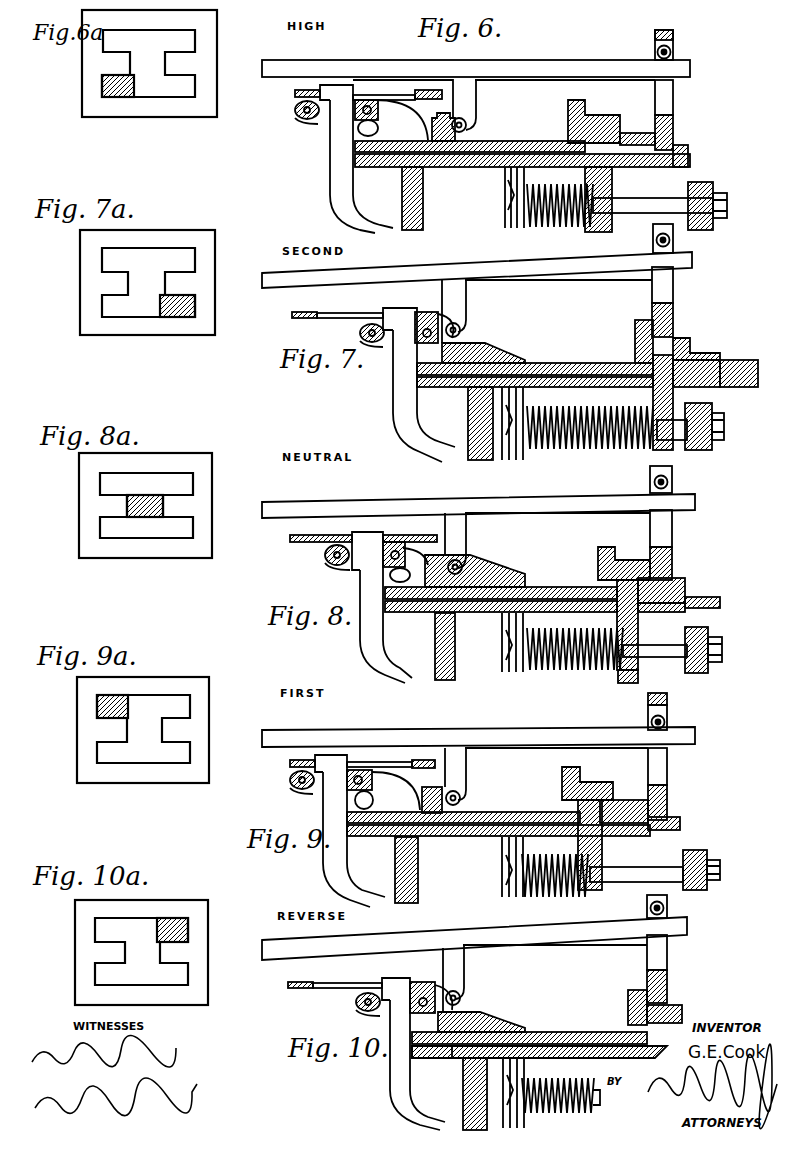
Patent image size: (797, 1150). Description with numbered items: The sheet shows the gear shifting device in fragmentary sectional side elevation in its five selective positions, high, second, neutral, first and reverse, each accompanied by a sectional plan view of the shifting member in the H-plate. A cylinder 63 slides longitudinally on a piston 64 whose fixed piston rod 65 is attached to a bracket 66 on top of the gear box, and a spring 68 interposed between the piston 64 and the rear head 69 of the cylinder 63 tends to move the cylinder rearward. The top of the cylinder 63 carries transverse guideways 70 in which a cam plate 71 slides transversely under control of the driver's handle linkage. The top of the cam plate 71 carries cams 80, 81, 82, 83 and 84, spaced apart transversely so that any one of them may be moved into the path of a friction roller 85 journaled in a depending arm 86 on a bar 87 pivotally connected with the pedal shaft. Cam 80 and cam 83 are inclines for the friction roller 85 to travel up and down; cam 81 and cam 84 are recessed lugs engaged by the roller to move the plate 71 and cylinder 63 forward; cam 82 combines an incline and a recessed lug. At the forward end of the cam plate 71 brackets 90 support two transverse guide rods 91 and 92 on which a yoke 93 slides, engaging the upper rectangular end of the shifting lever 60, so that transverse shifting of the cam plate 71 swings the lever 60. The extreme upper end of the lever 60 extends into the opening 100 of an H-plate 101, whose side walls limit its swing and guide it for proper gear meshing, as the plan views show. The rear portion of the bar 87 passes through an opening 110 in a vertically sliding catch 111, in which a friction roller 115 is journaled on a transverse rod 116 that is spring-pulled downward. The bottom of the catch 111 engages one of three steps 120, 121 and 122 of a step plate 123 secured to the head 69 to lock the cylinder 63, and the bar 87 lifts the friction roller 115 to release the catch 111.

In FIG. 6A, the shifting lever 60 is at (108, 97).
In FIG. 7A, the shifting lever 60 is at (197, 306).
In FIG. 8A, the shifting lever 60 is at (143, 517).
In FIG. 9A, the shifting lever 60 is at (112, 695).
In FIG. 10A, the shifting lever 60 is at (188, 930).
In FIG. 6, the shifting lever 60 is at (331, 193).
In FIG. 7, the shifting lever 60 is at (393, 383).
In FIG. 8, the shifting lever 60 is at (360, 638).
In FIG. 9, the shifting lever 60 is at (323, 858).
In FIG. 10, the shifting lever 60 is at (390, 1076).
In FIG. 6, the cylinder 63 is at (427, 198).
In FIG. 7, the cylinder 63 is at (468, 403).
In FIG. 8, the cylinder 63 is at (456, 639).
In FIG. 9, the cylinder 63 is at (418, 863).
In FIG. 10, the cylinder 63 is at (463, 1085).
In FIG. 6, the piston 64 is at (505, 210).
In FIG. 7, the piston 64 is at (516, 431).
In FIG. 8, the piston 64 is at (502, 662).
In FIG. 9, the piston 64 is at (502, 852).
In FIG. 10, the piston 64 is at (516, 1071).
In FIG. 6, the piston rod 65 is at (646, 198).
In FIG. 7, the piston rod 65 is at (636, 440).
In FIG. 8, the piston rod 65 is at (660, 657).
In FIG. 9, the piston rod 65 is at (655, 867).
In FIG. 10, the piston rod 65 is at (597, 1106).
In FIG. 6, the bracket 66 is at (704, 182).
In FIG. 7, the bracket 66 is at (712, 445).
In FIG. 8, the bracket 66 is at (711, 627).
In FIG. 9, the bracket 66 is at (700, 850).
In FIG. 6, the spring 68 is at (553, 229).
In FIG. 7, the spring 68 is at (590, 435).
In FIG. 8, the spring 68 is at (575, 659).
In FIG. 9, the spring 68 is at (555, 885).
In FIG. 10, the spring 68 is at (558, 1106).
In FIG. 8, the rear head 69 is at (627, 683).
In FIG. 9, the rear head 69 is at (642, 701).
In FIG. 6, the transverse guideways 70 is at (612, 168).
In FIG. 7, the transverse guideways 70 is at (652, 360).
In FIG. 8, the transverse guideways 70 is at (617, 620).
In FIG. 9, the transverse guideways 70 is at (602, 835).
In FIG. 10, the transverse guideways 70 is at (420, 1058).
In FIG. 6, the cam plate 71 is at (530, 141).
In FIG. 7, the cam plate 71 is at (561, 363).
In FIG. 8, the cam plate 71 is at (547, 587).
In FIG. 9, the cam plate 71 is at (531, 812).
In FIG. 10, the cam plate 71 is at (539, 1035).
In FIG. 10, the cam 80 is at (488, 1020).
In FIG. 9, the cam 81 is at (428, 787).
In FIG. 8, the cam 82 is at (470, 578).
In FIG. 7, the cam 83 is at (486, 350).
In FIG. 6, the cam 84 is at (441, 118).
In FIG. 6, the friction roller 85 is at (467, 127).
In FIG. 7, the friction roller 85 is at (461, 329).
In FIG. 8, the friction roller 85 is at (462, 563).
In FIG. 9, the friction roller 85 is at (461, 796).
In FIG. 10, the friction roller 85 is at (461, 998).
In FIG. 6, the depending arm 86 is at (477, 88).
In FIG. 7, the depending arm 86 is at (467, 297).
In FIG. 8, the depending arm 86 is at (467, 531).
In FIG. 9, the depending arm 86 is at (467, 766).
In FIG. 10, the depending arm 86 is at (465, 968).
In FIG. 6, the bar 87 is at (509, 61).
In FIG. 7, the bar 87 is at (533, 276).
In FIG. 8, the bar 87 is at (533, 512).
In FIG. 9, the bar 87 is at (478, 730).
In FIG. 10, the bar 87 is at (543, 943).
In FIG. 6, the brackets 90 is at (391, 112).
In FIG. 8, the brackets 90 is at (411, 554).
In FIG. 9, the brackets 90 is at (383, 785).
In FIG. 6, the guide rod 91 is at (295, 110).
In FIG. 7, the guide rod 91 is at (360, 333).
In FIG. 8, the guide rod 91 is at (325, 556).
In FIG. 9, the guide rod 91 is at (290, 780).
In FIG. 10, the guide rod 91 is at (356, 1001).
In FIG. 6, the guide rod 92 is at (366, 118).
In FIG. 7, the guide rod 92 is at (430, 312).
In FIG. 8, the guide rod 92 is at (396, 562).
In FIG. 9, the guide rod 92 is at (360, 790).
In FIG. 10, the guide rod 92 is at (425, 982).
In FIG. 6, the yoke 93 is at (315, 123).
In FIG. 7, the yoke 93 is at (378, 348).
In FIG. 8, the yoke 93 is at (345, 567).
In FIG. 9, the yoke 93 is at (310, 792).
In FIG. 10, the yoke 93 is at (378, 1017).
In FIG. 6A, the opening 100 is at (148, 90).
In FIG. 7A, the opening 100 is at (193, 330).
In FIG. 8A, the opening 100 is at (170, 538).
In FIG. 9A, the opening 100 is at (154, 702).
In FIG. 10A, the opening 100 is at (140, 930).
In FIG. 6, the opening 100 is at (370, 95).
In FIG. 7, the opening 100 is at (357, 313).
In FIG. 8, the opening 100 is at (352, 534).
In FIG. 9, the opening 100 is at (366, 762).
In FIG. 10, the opening 100 is at (353, 983).
In FIG. 6A, the H-plate 101 is at (197, 107).
In FIG. 7A, the H-plate 101 is at (138, 312).
In FIG. 8A, the H-plate 101 is at (212, 493).
In FIG. 9A, the H-plate 101 is at (204, 681).
In FIG. 10A, the H-plate 101 is at (83, 938).
In FIG. 6, the H-plate 101 is at (295, 93).
In FIG. 7, the H-plate 101 is at (292, 316).
In FIG. 8, the H-plate 101 is at (290, 538).
In FIG. 9, the H-plate 101 is at (290, 764).
In FIG. 10, the H-plate 101 is at (297, 989).
In FIG. 6, the opening 110 is at (674, 88).
In FIG. 7, the opening 110 is at (674, 281).
In FIG. 8, the opening 110 is at (673, 525).
In FIG. 9, the opening 110 is at (668, 768).
In FIG. 10, the opening 110 is at (668, 951).
In FIG. 6, the catch 111 is at (674, 119).
In FIG. 7, the catch 111 is at (674, 310).
In FIG. 8, the catch 111 is at (673, 553).
In FIG. 9, the catch 111 is at (668, 792).
In FIG. 10, the catch 111 is at (668, 979).
In FIG. 6, the friction roller 115 is at (674, 53).
In FIG. 7, the friction roller 115 is at (674, 240).
In FIG. 8, the friction roller 115 is at (673, 482).
In FIG. 9, the friction roller 115 is at (668, 722).
In FIG. 10, the friction roller 115 is at (650, 908).
In FIG. 6, the transverse rod 116 is at (657, 53).
In FIG. 7, the transverse rod 116 is at (656, 240).
In FIG. 8, the transverse rod 116 is at (654, 482).
In FIG. 9, the transverse rod 116 is at (651, 722).
In FIG. 10, the transverse rod 116 is at (668, 908).
In FIG. 6, the step 120 is at (683, 143).
In FIG. 7, the step 120 is at (744, 361).
In FIG. 8, the step 120 is at (690, 597).
In FIG. 9, the step 120 is at (672, 817).
In FIG. 6, the step 121 is at (635, 133).
In FIG. 7, the step 121 is at (706, 353).
In FIG. 8, the step 121 is at (668, 582).
In FIG. 9, the step 121 is at (624, 805).
In FIG. 10, the step 121 is at (683, 1018).
In FIG. 6, the step 122 is at (603, 115).
In FIG. 7, the step 122 is at (658, 343).
In FIG. 8, the step 122 is at (622, 552).
In FIG. 9, the step 122 is at (595, 782).
In FIG. 10, the step 122 is at (658, 1008).
In FIG. 7, the step plate 123 is at (708, 387).
In FIG. 8, the step plate 123 is at (661, 615).